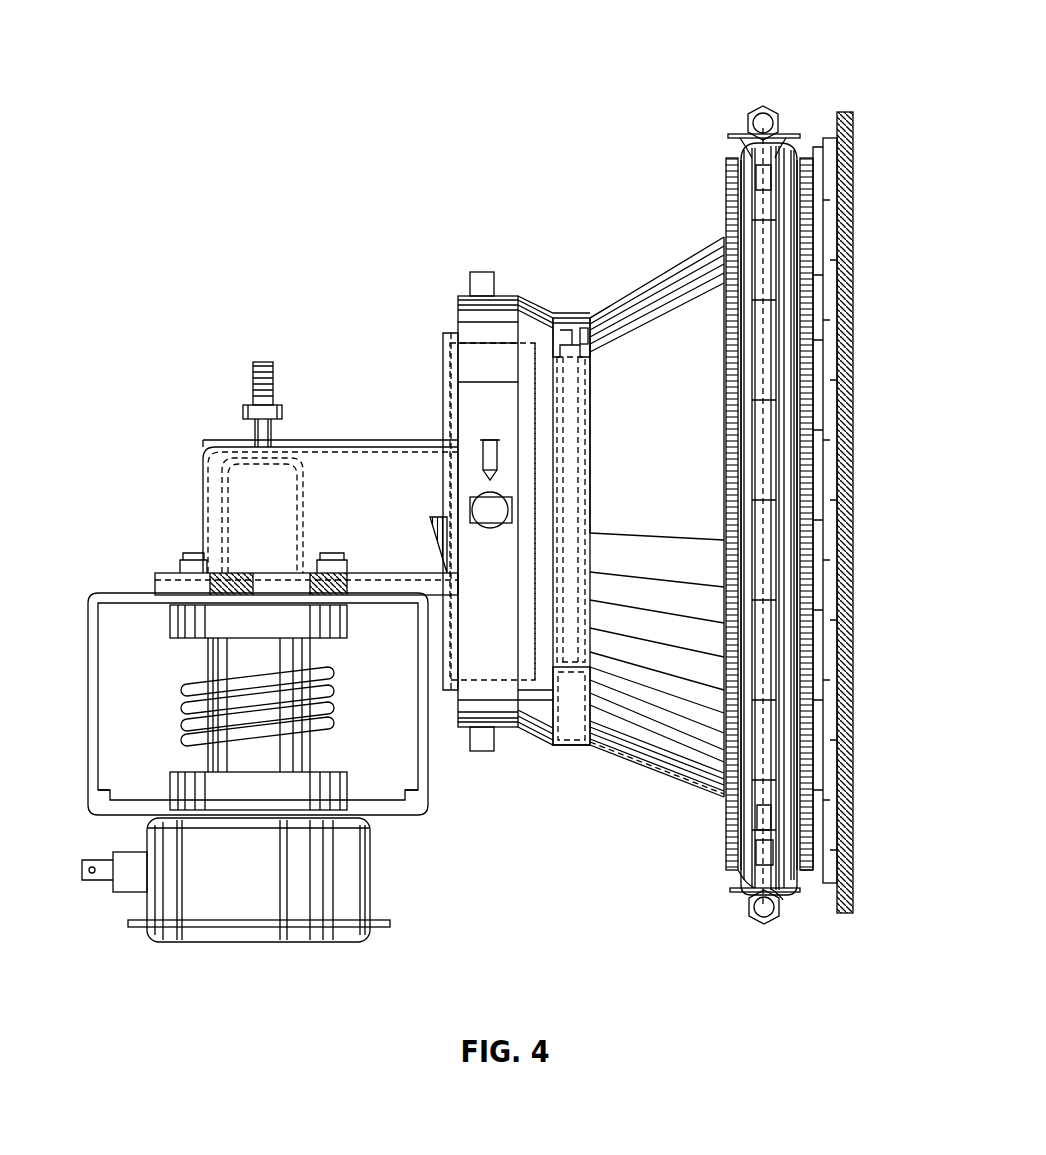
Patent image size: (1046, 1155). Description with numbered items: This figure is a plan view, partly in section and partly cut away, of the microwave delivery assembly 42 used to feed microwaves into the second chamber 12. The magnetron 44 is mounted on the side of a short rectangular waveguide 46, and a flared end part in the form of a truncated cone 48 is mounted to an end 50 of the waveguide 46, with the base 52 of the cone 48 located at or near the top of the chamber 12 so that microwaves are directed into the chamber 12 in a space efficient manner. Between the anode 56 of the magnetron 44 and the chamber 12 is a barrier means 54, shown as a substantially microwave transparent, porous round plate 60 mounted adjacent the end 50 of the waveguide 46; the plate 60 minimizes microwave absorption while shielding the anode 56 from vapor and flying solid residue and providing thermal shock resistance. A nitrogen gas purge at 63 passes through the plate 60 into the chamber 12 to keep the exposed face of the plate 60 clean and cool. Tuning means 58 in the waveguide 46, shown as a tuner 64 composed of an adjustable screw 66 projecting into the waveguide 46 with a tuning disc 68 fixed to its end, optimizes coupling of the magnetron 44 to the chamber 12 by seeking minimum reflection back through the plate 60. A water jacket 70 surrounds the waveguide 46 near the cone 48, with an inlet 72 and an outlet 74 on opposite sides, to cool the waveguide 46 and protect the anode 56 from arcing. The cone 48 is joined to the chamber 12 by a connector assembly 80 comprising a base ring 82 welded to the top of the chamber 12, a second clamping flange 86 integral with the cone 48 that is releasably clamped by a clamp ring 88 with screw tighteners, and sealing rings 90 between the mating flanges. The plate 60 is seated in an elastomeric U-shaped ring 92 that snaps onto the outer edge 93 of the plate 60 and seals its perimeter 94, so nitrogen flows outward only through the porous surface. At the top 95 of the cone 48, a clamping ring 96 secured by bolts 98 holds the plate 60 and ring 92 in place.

The second chamber 12 is at (853, 522).
The assembly 42 is at (498, 900).
The magnetron 44 is at (267, 942).
The waveguide 46 is at (215, 448).
The truncated cone 48 is at (638, 517).
The end of the waveguide 50 is at (590, 538).
The base of the cone 52 is at (726, 190).
The barrier means 54 is at (485, 660).
The anode 56 is at (222, 508).
The tuning means 58 is at (483, 460).
The porous round plate 60 is at (535, 730).
The nitrogen gas purge 63 is at (230, 400).
The tuner 64 is at (473, 505).
The adjustable screw 66 is at (445, 360).
The tuning disc 68 is at (455, 420).
The water jacket 70 is at (462, 296).
The inlet 72 is at (481, 272).
The outlet 74 is at (480, 751).
The connector assembly 80 is at (740, 912).
The base ring 82 is at (833, 795).
The second clamping flange 86 is at (808, 868).
The clamp ring 88 is at (797, 892).
The sealing rings 90 is at (768, 148).
The elastomeric U-shaped ring 92 is at (548, 745).
The outer edge of the plate 93 is at (572, 378).
The perimeter of the plate 94 is at (575, 350).
The top of the cone 95 is at (584, 328).
The clamping ring 96 is at (567, 322).
The bolts 98 is at (535, 298).